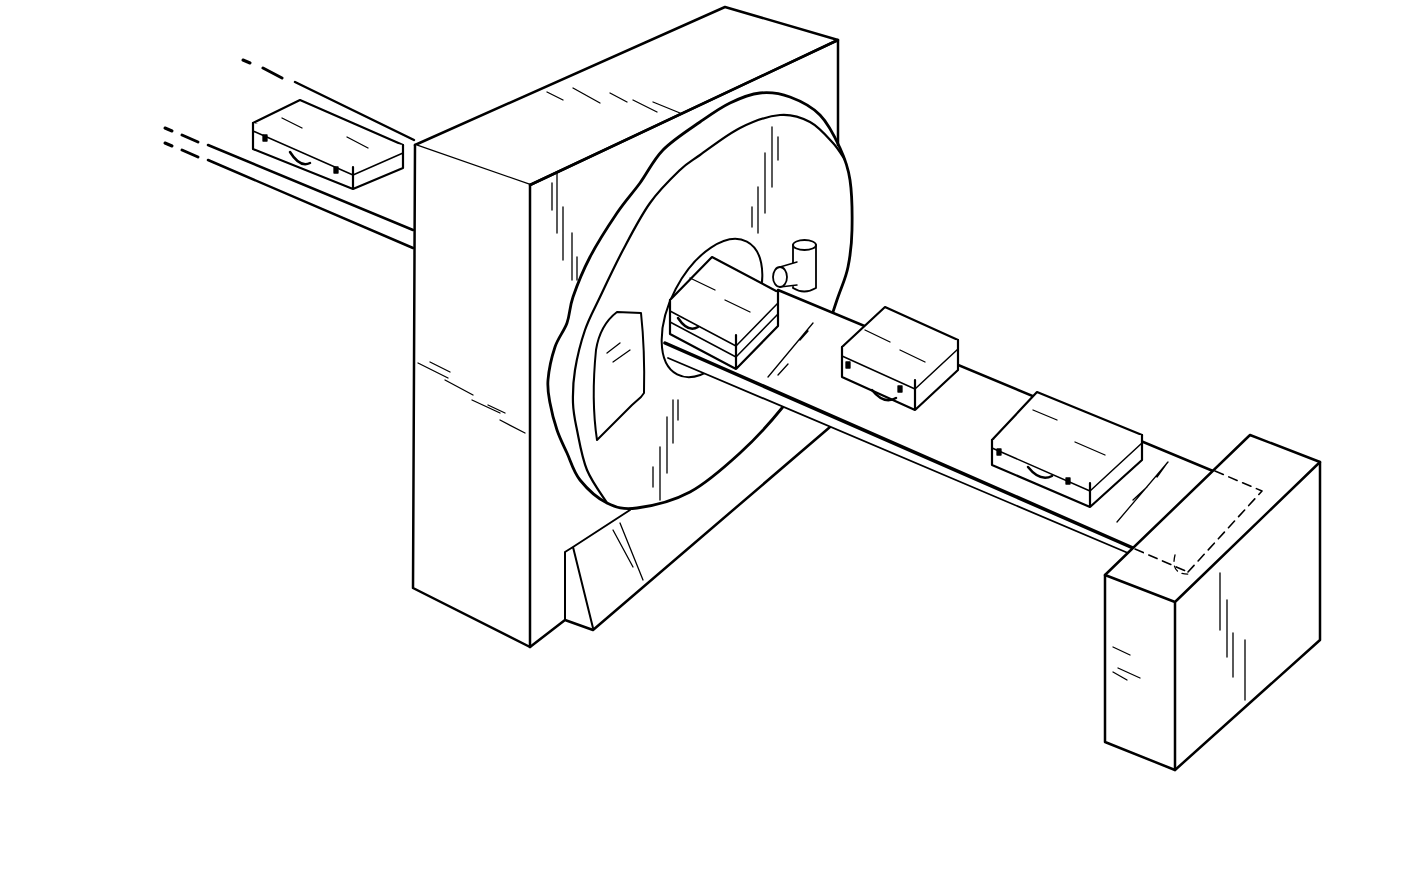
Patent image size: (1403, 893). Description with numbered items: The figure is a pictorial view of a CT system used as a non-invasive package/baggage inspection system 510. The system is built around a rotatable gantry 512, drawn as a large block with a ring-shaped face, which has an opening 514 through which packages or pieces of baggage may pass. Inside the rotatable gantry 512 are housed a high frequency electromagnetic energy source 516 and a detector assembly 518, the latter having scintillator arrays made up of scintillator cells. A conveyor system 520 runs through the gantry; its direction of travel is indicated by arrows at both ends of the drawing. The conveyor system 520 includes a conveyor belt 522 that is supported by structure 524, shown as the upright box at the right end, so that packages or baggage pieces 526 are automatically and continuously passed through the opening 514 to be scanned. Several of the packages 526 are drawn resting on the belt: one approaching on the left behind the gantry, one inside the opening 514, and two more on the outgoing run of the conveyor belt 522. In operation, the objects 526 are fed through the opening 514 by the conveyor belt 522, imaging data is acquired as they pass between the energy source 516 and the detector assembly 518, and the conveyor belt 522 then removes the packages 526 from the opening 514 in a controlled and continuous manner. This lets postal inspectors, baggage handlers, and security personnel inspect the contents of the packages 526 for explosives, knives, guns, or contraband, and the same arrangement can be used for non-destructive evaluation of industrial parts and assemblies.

The package/baggage inspection system 510 is at (1103, 198).
The rotatable gantry 512 is at (833, 181).
The opening 514 is at (733, 255).
The high frequency electromagnetic energy source 516 is at (816, 263).
The detector assembly 518 is at (614, 408).
The conveyor system 520 is at (163, 171).
The conveyor belt 522 is at (367, 203).
The structure 524 is at (1310, 565).
The packages or baggage pieces 526 is at (343, 130).